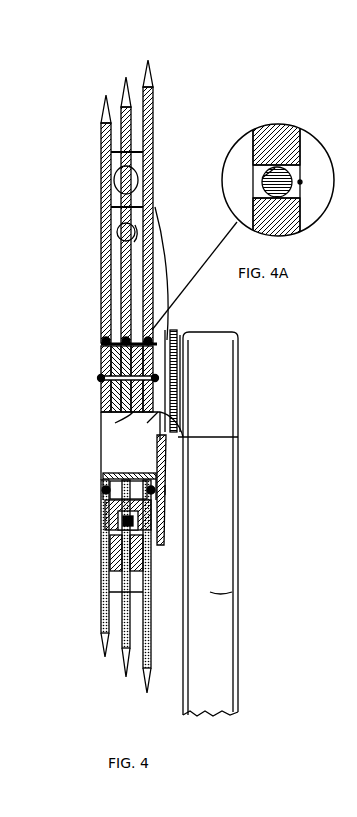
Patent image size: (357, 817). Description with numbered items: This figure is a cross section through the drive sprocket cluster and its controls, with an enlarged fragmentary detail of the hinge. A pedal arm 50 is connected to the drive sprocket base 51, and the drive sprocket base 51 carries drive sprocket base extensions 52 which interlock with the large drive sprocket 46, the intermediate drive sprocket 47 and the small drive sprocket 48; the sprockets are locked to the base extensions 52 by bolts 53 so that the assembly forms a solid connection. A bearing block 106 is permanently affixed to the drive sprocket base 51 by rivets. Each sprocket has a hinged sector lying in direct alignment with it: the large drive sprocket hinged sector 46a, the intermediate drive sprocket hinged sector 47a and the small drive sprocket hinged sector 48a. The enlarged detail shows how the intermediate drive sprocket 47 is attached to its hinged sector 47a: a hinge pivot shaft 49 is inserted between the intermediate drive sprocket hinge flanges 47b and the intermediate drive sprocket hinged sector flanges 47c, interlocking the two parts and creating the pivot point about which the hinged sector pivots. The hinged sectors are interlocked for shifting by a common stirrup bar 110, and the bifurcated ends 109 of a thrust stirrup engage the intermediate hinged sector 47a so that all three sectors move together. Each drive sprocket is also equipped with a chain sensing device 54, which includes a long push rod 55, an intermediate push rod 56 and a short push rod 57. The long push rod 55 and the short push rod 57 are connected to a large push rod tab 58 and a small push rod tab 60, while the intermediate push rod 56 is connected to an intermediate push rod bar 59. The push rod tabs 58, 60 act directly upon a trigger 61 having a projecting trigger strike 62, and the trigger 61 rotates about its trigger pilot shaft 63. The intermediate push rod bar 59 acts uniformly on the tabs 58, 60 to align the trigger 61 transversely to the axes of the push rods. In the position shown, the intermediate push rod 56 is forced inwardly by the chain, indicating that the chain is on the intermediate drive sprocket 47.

In FIG. 4, the large drive sprocket hinged sector 46a is at (148, 60).
In FIG. 4, the intermediate drive sprocket hinged sector 47a is at (126, 77).
In FIG. 4A, the intermediate drive sprocket hinged sector 47a is at (278, 135).
In FIG. 4, the small drive sprocket hinged sector 48a is at (106, 95).
In FIG. 4, the common stirrup bar 110 is at (153, 152).
In FIG. 4, the bearing block 106 is at (115, 158).
In FIG. 4, the bifurcated ends 109 is at (124, 240).
In FIG. 4, the hinge pivot shaft 49 is at (126, 337).
In FIG. 4A, the hinge pivot shaft 49 is at (305, 160).
In FIG. 4, the large drive sprocket 46 is at (103, 356).
In FIG. 4, the intermediate drive sprocket 47 is at (103, 368).
In FIG. 4A, the intermediate drive sprocket 47 is at (282, 232).
In FIG. 4, the small drive sprocket 48 is at (103, 382).
In FIG. 4, the bolts 53 is at (103, 406).
In FIG. 4, the drive sprocket base extensions 52 is at (120, 416).
In FIG. 4, the drive sprocket base 51 is at (176, 330).
In FIG. 4, the pedal arm 50 is at (222, 593).
In FIG. 4, the large push rod tab 58 is at (165, 485).
In FIG. 4, the trigger pilot shaft 63 is at (125, 473).
In FIG. 4, the trigger 61 is at (103, 478).
In FIG. 4, the trigger strike 62 is at (103, 488).
In FIG. 4, the small push rod tab 60 is at (108, 492).
In FIG. 4, the intermediate push rod bar 59 is at (103, 505).
In FIG. 4, the chain sensing device 54 is at (88, 539).
In FIG. 4, the short push rod 57 is at (100, 635).
In FIG. 4, the intermediate push rod 56 is at (124, 665).
In FIG. 4, the long push rod 55 is at (150, 686).
In FIG. 4A, the intermediate drive sprocket hinge flanges 47b is at (297, 128).
In FIG. 4A, the intermediate drive sprocket hinged sector flanges 47c is at (262, 188).